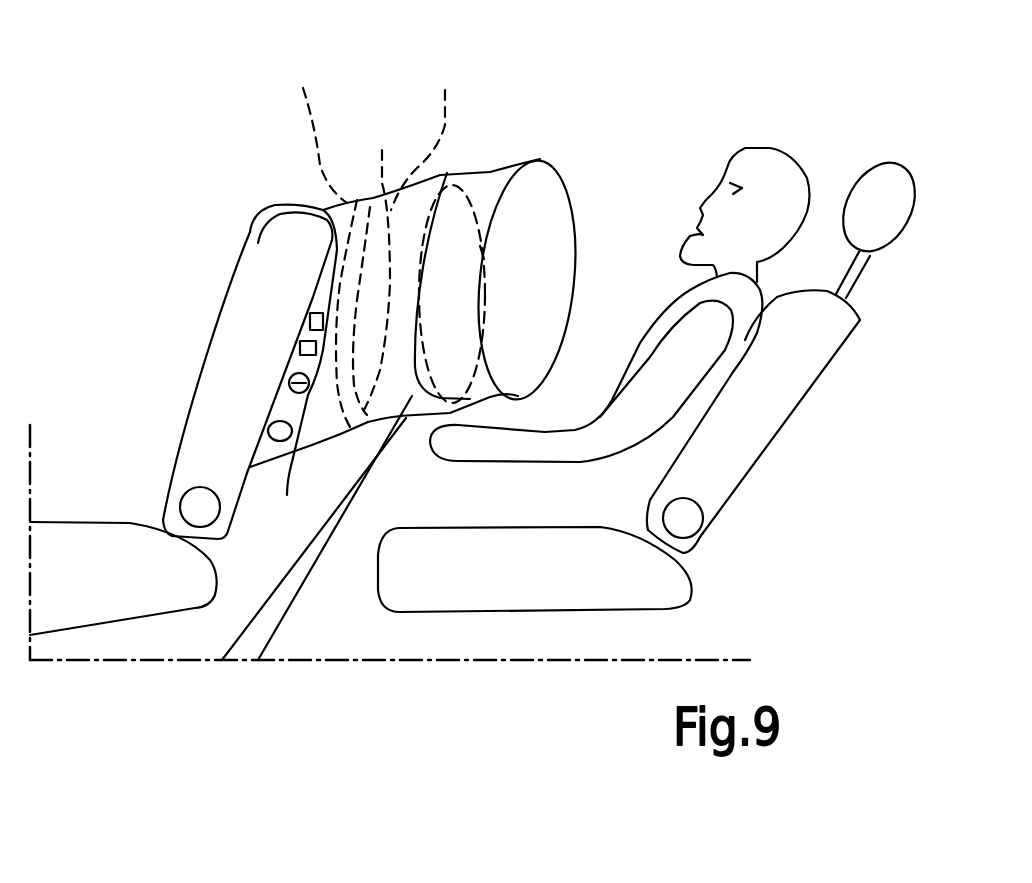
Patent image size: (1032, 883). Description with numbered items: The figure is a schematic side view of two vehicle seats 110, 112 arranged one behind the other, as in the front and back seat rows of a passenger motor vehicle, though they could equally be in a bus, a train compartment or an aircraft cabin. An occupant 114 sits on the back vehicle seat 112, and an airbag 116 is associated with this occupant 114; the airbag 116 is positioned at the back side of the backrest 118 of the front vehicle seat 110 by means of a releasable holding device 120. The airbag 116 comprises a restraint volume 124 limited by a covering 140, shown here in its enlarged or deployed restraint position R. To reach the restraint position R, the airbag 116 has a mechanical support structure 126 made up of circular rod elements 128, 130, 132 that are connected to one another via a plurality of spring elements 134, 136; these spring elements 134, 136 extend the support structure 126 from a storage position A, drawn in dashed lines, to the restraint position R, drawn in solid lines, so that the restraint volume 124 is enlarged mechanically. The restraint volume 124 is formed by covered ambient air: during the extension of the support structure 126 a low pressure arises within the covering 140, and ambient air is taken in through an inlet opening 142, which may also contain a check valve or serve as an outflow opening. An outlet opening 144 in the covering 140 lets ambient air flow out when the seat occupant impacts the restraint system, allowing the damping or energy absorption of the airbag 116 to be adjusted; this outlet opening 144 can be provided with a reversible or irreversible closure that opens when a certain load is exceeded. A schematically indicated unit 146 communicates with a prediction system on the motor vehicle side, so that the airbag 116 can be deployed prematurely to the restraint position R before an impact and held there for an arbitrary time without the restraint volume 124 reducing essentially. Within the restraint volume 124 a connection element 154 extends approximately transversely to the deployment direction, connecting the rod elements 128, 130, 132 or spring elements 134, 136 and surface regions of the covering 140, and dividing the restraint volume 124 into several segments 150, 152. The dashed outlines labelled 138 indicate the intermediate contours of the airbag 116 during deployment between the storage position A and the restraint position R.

The vehicle seat 110 is at (390, 375).
The vehicle seat 112 is at (879, 170).
The occupant 114 is at (632, 451).
The airbag 116 is at (620, 271).
The backrest 118 is at (274, 446).
The releasable holding device 120 is at (378, 282).
The restraint volume 124 is at (500, 251).
The mechanical support structure 126 is at (416, 573).
The rod element 128 is at (523, 569).
The rod element 130 is at (369, 573).
The rod element 132 is at (259, 617).
The spring element 134 is at (466, 584).
The spring element 136 is at (353, 599).
The intermediate airbag contour 138 is at (368, 232).
The covering 140 is at (633, 164).
The inlet opening 142 is at (206, 595).
The outlet opening 144 is at (196, 407).
The unit 146 is at (199, 371).
The segment 150 is at (452, 294).
The segment 152 is at (372, 313).
The connection element 154 is at (571, 228).
The storage position A is at (349, 113).
The restraint position R is at (542, 80).